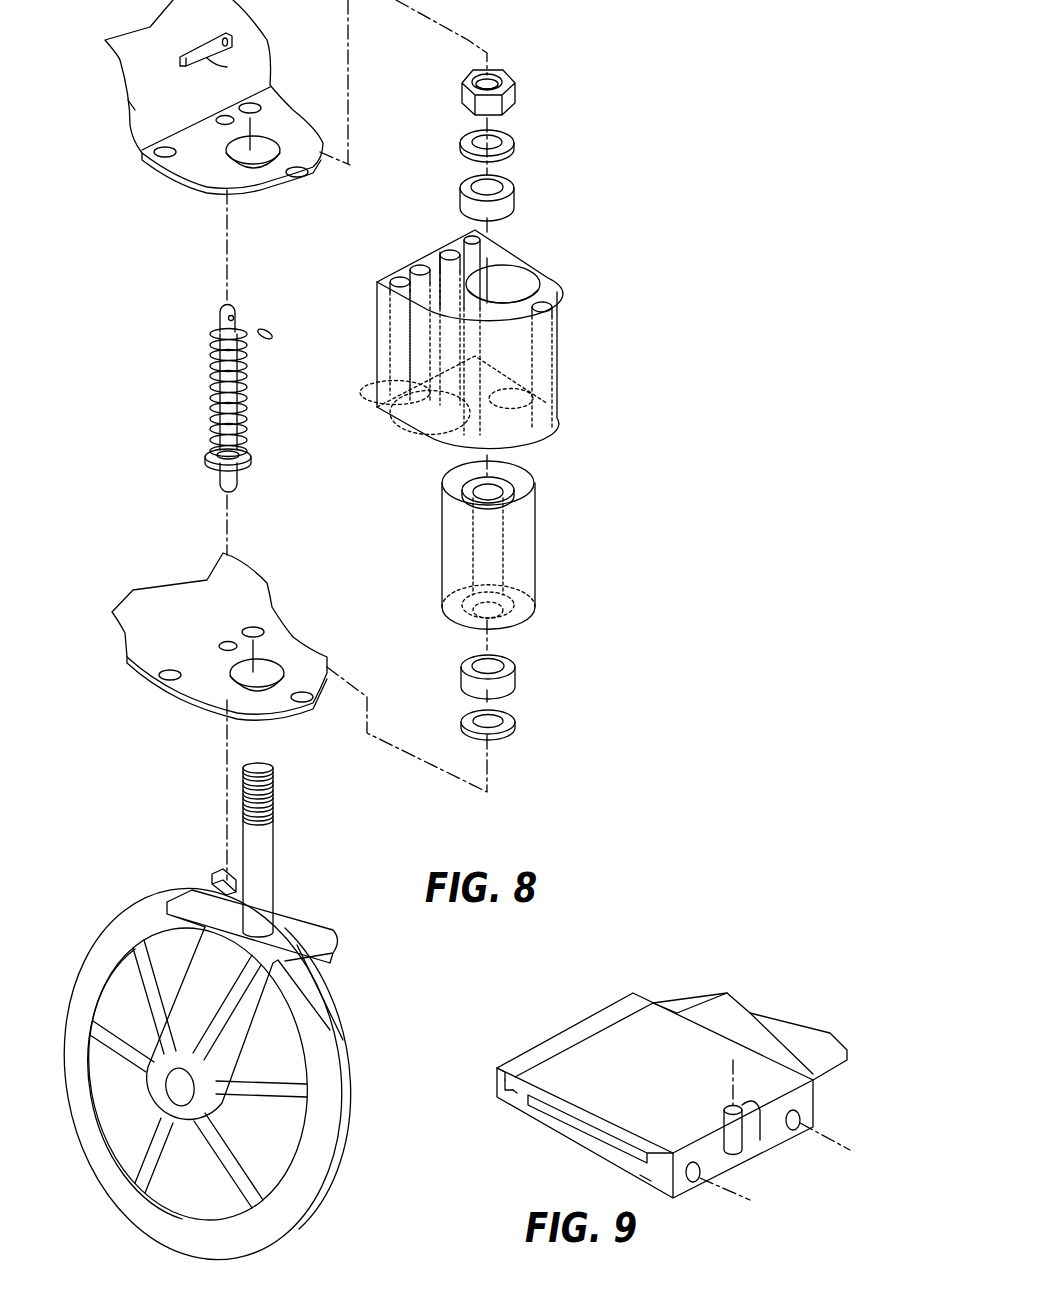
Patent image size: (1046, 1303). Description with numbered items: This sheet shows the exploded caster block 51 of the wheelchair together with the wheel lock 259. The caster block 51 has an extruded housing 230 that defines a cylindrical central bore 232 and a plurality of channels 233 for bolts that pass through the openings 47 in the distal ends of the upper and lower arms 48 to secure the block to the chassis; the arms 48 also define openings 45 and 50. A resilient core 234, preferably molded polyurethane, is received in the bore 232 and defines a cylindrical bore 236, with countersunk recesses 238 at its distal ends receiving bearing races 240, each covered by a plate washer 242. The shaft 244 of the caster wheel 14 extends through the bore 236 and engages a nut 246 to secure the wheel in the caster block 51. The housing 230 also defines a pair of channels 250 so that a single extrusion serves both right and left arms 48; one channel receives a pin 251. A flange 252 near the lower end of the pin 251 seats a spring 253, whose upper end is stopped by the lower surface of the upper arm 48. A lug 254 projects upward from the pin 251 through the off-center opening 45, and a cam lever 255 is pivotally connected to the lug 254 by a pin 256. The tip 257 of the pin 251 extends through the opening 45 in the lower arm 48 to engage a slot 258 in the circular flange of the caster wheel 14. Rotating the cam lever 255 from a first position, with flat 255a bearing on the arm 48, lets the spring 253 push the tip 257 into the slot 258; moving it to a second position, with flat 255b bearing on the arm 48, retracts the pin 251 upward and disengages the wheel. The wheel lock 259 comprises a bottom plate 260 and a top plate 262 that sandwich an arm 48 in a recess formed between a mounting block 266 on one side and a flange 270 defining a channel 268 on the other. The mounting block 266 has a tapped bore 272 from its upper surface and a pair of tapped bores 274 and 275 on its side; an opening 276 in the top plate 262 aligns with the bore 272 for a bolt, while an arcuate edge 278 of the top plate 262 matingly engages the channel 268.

In FIG. 8, the caster wheel 14 is at (112, 920).
In FIG. 8, the opening 45 is at (220, 124).
In FIG. 8, the opening 47 is at (255, 106).
In FIG. 8, the arm 48 is at (170, 97).
In FIG. 9, the arm 48 is at (808, 1055).
In FIG. 8, the opening 50 is at (265, 690).
In FIG. 8, the caster block 51 is at (609, 362).
In FIG. 8, the extruded housing 230 is at (545, 283).
In FIG. 8, the cylindrical central bore 232 is at (510, 272).
In FIG. 8, the channel 233 is at (467, 232).
In FIG. 8, the resilient core 234 is at (525, 578).
In FIG. 8, the cylindrical bore 236 is at (505, 535).
In FIG. 8, the countersunk recess 238 is at (510, 487).
In FIG. 8, the bearing race 240 is at (512, 201).
In FIG. 8, the plate washer 242 is at (515, 140).
In FIG. 8, the shaft 244 is at (268, 868).
In FIG. 8, the nut 246 is at (515, 95).
In FIG. 8, the channel 250 is at (447, 254).
In FIG. 8, the pin 251 is at (212, 405).
In FIG. 8, the flange 252 is at (207, 455).
In FIG. 8, the spring 253 is at (212, 360).
In FIG. 8, the lug 254 is at (238, 315).
In FIG. 8, the cam lever 255 is at (222, 50).
In FIG. 8, the flat 255a is at (232, 42).
In FIG. 8, the flat 255b is at (130, 128).
In FIG. 8, the pin 256 is at (272, 338).
In FIG. 8, the tip 257 is at (236, 482).
In FIG. 8, the slot 258 is at (213, 878).
In FIG. 9, the wheel lock 259 is at (522, 1023).
In FIG. 9, the bottom plate 260 is at (590, 1132).
In FIG. 9, the top plate 262 is at (640, 1084).
In FIG. 9, the mounting block 266 is at (680, 1190).
In FIG. 9, the channel 268 is at (505, 1085).
In FIG. 9, the flange 270 is at (505, 1072).
In FIG. 9, the tapped bore 272 is at (745, 1142).
In FIG. 9, the tapped bore 274 is at (695, 1178).
In FIG. 9, the tapped bore 275 is at (800, 1112).
In FIG. 9, the opening 276 is at (750, 1130).
In FIG. 9, the arcuate edge 278 is at (517, 1094).